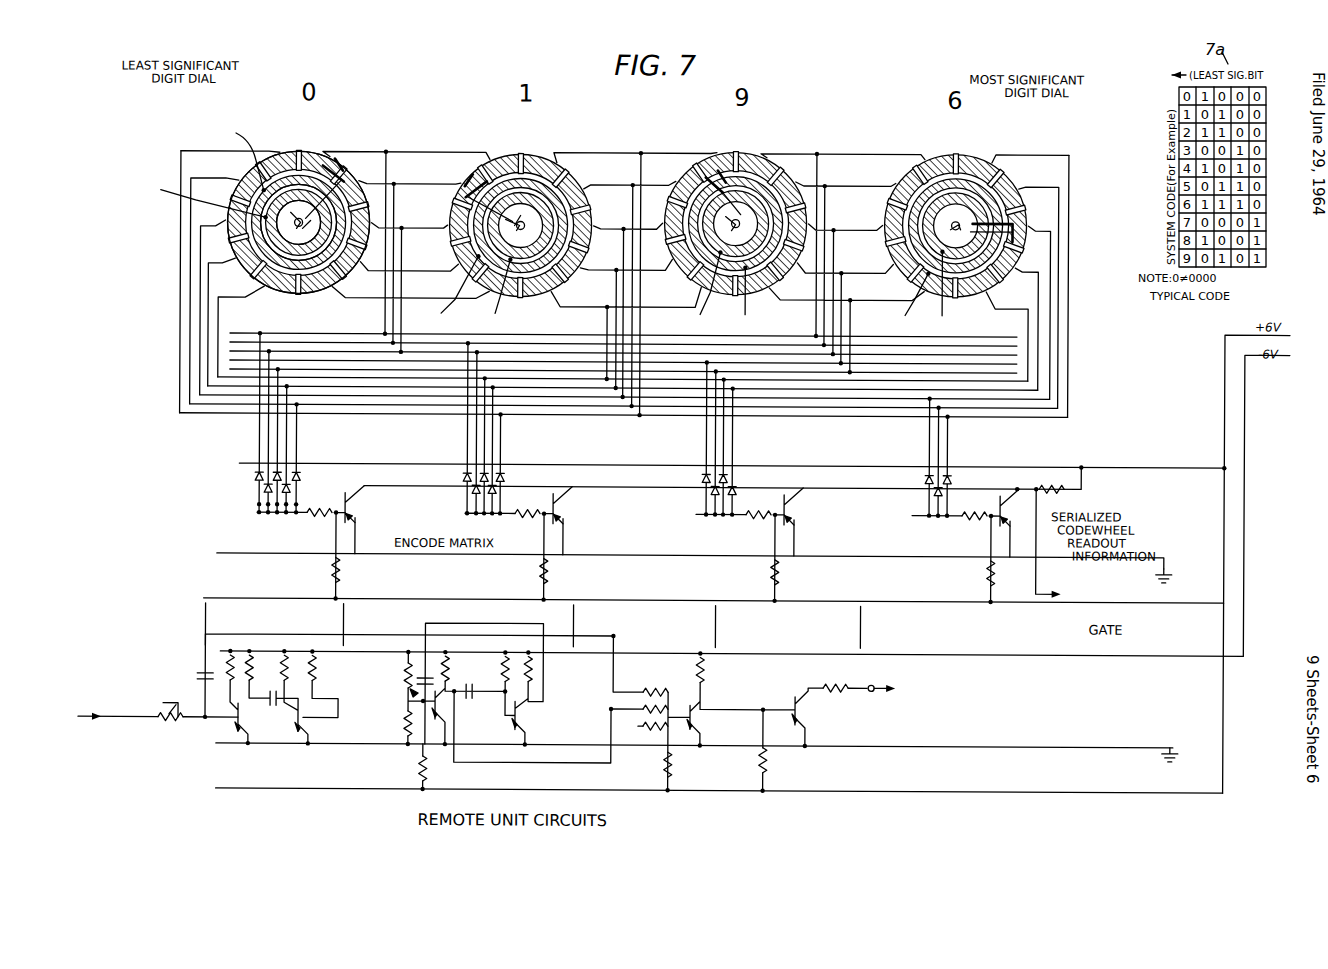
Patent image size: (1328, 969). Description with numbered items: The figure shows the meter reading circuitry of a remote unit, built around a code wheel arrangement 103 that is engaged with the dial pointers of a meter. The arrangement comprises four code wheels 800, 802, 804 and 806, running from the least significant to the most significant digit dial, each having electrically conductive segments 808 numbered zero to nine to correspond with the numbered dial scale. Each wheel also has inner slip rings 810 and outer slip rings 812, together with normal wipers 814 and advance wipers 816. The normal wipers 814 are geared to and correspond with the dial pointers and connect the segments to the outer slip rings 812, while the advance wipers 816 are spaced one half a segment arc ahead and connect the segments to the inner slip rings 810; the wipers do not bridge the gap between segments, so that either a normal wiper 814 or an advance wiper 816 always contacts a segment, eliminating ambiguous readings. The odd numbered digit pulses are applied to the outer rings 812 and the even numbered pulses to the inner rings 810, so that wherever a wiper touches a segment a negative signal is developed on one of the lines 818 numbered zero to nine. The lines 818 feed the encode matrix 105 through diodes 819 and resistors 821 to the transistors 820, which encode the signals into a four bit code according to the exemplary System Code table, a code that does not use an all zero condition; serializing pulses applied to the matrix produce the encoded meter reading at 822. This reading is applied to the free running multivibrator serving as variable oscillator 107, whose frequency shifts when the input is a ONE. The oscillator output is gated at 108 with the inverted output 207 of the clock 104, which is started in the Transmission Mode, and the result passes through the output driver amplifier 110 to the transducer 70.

The code wheel arrangement 103 is at (606, 101).
The encode matrix 105 is at (784, 466).
The variable oscillator 107 is at (318, 626).
The clock 104 is at (408, 626).
The gate 108 is at (676, 626).
The driver amplifier 110 is at (818, 626).
The output of clock 207 is at (532, 706).
The transducer 70 is at (955, 689).
The code wheel 800 is at (318, 146).
The code wheel 802 is at (545, 148).
The code wheel 804 is at (755, 145).
The code wheel 806 is at (977, 152).
The electrically conductive segments 808 is at (287, 151).
The inner slip rings 810 is at (308, 252).
The outer slip rings 812 is at (322, 264).
The normal wipers 814 is at (350, 164).
The advance wipers 816 is at (318, 210).
The lines 818 is at (392, 420).
The diodes 819 is at (255, 497).
The transistors 820 is at (362, 524).
The resistors 821 is at (324, 531).
The encoded meter reading 822 is at (1062, 586).